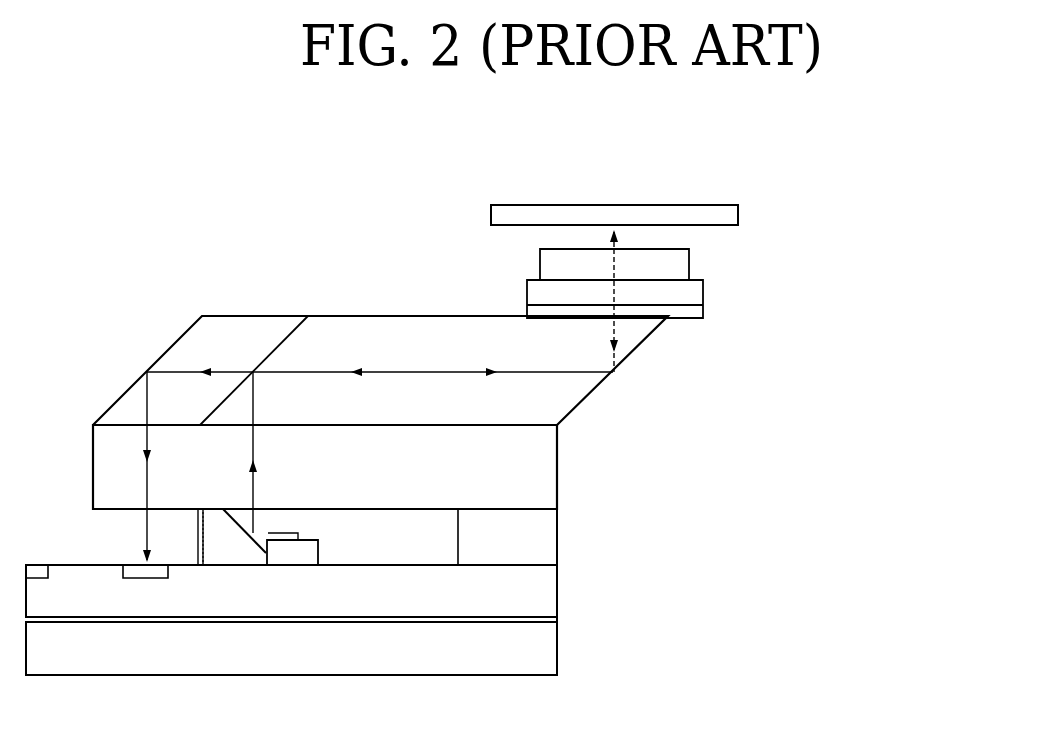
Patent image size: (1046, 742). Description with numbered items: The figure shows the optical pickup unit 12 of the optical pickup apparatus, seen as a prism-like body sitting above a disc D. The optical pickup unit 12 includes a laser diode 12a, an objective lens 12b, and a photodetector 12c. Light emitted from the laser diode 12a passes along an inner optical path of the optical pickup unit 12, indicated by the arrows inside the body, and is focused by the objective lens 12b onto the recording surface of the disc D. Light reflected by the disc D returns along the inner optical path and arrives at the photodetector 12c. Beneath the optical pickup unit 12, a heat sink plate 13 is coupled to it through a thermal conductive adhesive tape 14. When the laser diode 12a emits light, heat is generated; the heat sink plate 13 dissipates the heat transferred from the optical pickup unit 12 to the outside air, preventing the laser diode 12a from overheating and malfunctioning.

The optical pickup unit 12 is at (634, 382).
The laser diode 12a is at (295, 532).
The objective lens 12b is at (684, 265).
The photodetector 12c is at (147, 578).
The heat sink plate 13 is at (550, 653).
The thermal conductive adhesive tape 14 is at (557, 621).
The disc D is at (710, 205).